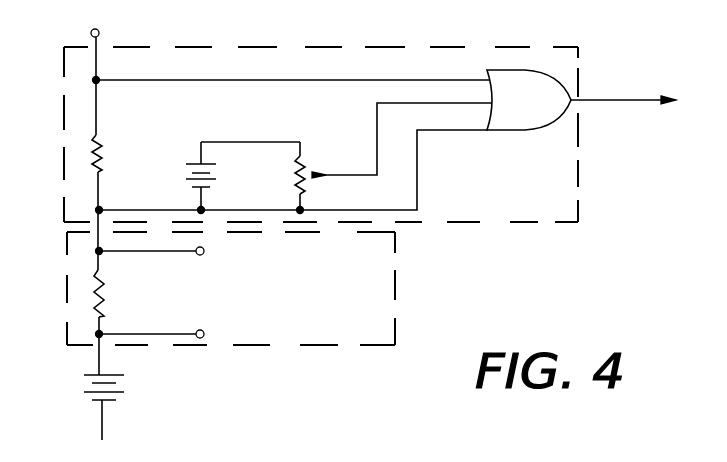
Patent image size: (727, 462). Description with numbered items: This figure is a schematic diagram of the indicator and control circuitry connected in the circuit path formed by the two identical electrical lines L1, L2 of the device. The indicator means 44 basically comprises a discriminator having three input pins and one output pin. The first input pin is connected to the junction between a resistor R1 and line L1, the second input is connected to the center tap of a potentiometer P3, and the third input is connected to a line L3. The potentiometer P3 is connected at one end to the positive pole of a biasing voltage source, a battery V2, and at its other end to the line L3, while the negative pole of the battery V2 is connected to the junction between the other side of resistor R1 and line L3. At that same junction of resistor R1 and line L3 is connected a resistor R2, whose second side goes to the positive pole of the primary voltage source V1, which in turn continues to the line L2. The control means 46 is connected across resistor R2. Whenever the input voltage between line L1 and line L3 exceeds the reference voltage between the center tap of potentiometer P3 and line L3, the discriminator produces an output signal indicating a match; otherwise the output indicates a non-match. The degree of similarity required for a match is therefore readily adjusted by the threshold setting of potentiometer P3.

The electrical line L1 is at (91, 38).
The electrical line L2 is at (100, 426).
The line L3 is at (380, 208).
The resistor R1 is at (103, 152).
The resistor R2 is at (104, 300).
The primary voltage source V1 is at (117, 407).
The biasing voltage source V2 is at (227, 176).
The potentiometer P3 is at (304, 166).
The indicator means 44 is at (516, 188).
The control means 46 is at (277, 299).